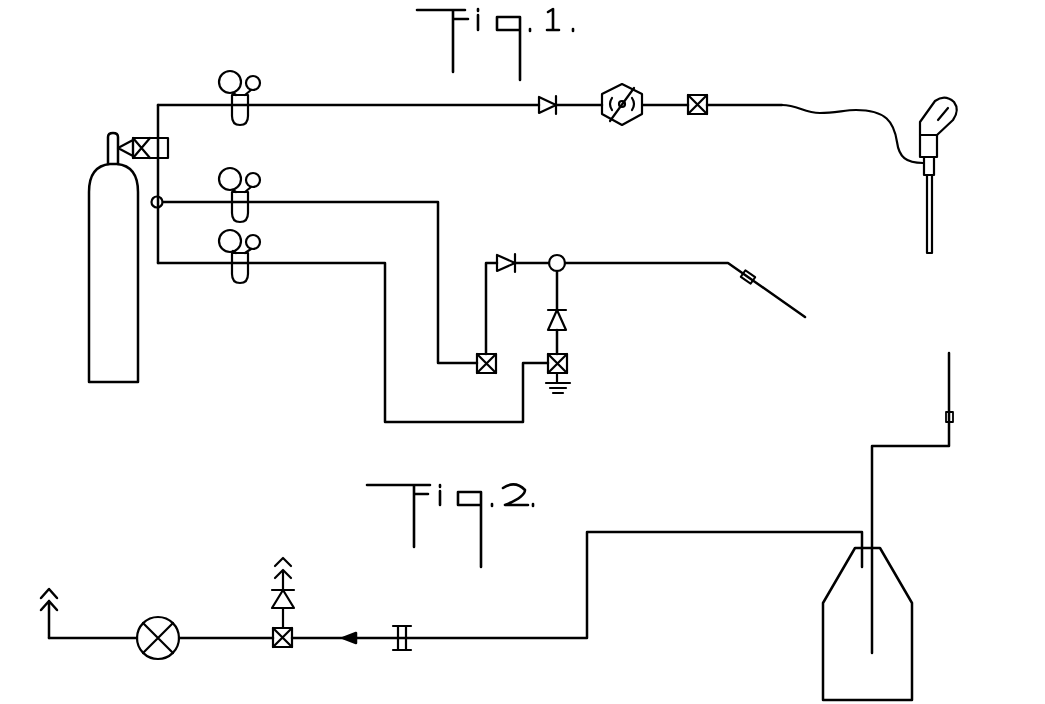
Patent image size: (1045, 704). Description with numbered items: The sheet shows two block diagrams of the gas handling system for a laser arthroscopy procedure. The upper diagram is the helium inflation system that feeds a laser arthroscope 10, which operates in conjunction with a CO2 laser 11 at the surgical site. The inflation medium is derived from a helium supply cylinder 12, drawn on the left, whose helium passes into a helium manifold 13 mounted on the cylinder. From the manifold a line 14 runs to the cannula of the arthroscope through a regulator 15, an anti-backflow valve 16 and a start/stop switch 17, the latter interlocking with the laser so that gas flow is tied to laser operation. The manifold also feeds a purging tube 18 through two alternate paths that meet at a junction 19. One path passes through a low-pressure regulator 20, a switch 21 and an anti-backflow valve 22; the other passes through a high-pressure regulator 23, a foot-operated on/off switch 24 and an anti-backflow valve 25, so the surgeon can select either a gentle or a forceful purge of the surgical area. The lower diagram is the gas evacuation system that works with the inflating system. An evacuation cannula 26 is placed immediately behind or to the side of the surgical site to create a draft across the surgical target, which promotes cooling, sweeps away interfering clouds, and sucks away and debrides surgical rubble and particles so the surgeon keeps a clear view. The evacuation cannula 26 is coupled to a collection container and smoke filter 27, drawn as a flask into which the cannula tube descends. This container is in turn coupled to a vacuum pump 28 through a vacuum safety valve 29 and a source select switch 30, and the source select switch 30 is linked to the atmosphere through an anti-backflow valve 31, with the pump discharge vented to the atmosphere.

In FIG. 1, the laser arthroscope 10 is at (925, 210).
In FIG. 1, the CO2 laser 11 is at (930, 110).
In FIG. 1, the helium supply cylinder 12 is at (130, 347).
In FIG. 1, the helium manifold 13 is at (148, 138).
In FIG. 1, the line 14 is at (770, 108).
In FIG. 1, the regulator 15 is at (250, 120).
In FIG. 1, the anti-backflow valve 16 is at (547, 113).
In FIG. 1, the start/stop switch 17 is at (707, 118).
In FIG. 1, the purging tube 18 is at (787, 308).
In FIG. 1, the junction 19 is at (565, 270).
In FIG. 1, the low-pressure regulator 20 is at (250, 217).
In FIG. 1, the switch 21 is at (490, 377).
In FIG. 1, the anti-backflow valve 22 is at (505, 257).
In FIG. 1, the high-pressure regulator 23 is at (250, 277).
In FIG. 1, the foot-operated on/off switch 24 is at (568, 364).
In FIG. 1, the anti-backflow valve 25 is at (568, 320).
In FIG. 2, the evacuation cannula 26 is at (948, 382).
In FIG. 2, the collection container and smoke filter 27 is at (822, 617).
In FIG. 2, the vacuum pump 28 is at (171, 622).
In FIG. 2, the vacuum safety valve 29 is at (407, 650).
In FIG. 2, the source select switch 30 is at (290, 650).
In FIG. 2, the anti-backflow valve 31 is at (289, 603).